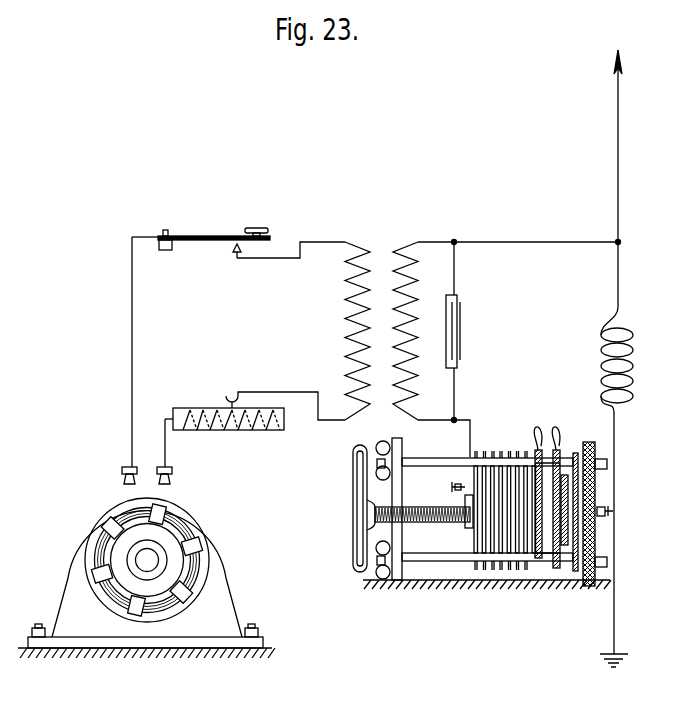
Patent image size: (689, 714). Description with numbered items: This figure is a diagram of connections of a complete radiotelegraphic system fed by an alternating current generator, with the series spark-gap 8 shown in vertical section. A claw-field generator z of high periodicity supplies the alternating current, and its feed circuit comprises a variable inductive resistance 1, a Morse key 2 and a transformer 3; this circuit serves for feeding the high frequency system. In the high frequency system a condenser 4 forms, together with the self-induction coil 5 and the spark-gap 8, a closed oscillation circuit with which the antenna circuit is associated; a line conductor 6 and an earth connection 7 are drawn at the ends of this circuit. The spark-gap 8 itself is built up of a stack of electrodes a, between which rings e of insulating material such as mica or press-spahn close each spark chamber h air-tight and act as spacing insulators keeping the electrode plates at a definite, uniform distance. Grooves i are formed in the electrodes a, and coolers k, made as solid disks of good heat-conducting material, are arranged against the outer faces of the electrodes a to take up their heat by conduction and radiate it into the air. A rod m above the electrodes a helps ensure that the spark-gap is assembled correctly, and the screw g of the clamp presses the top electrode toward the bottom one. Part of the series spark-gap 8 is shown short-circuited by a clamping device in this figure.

The variable inductive resistance 1 is at (255, 402).
The Morse key 2 is at (214, 236).
The transformer 3 is at (381, 331).
The condenser 4 is at (462, 331).
The self-induction coil 5 is at (629, 359).
The line conductor 6 is at (628, 178).
The earth connection 7 is at (608, 552).
The spark-gap 8 is at (499, 512).
The claw-field generator z is at (162, 562).
The rod m is at (427, 462).
The screw of the clamp g is at (453, 522).
The electrodes a is at (492, 548).
The ring of insulating material e is at (570, 470).
The coolers k is at (578, 453).
The grooves i is at (597, 482).
The spark chamber h is at (592, 528).